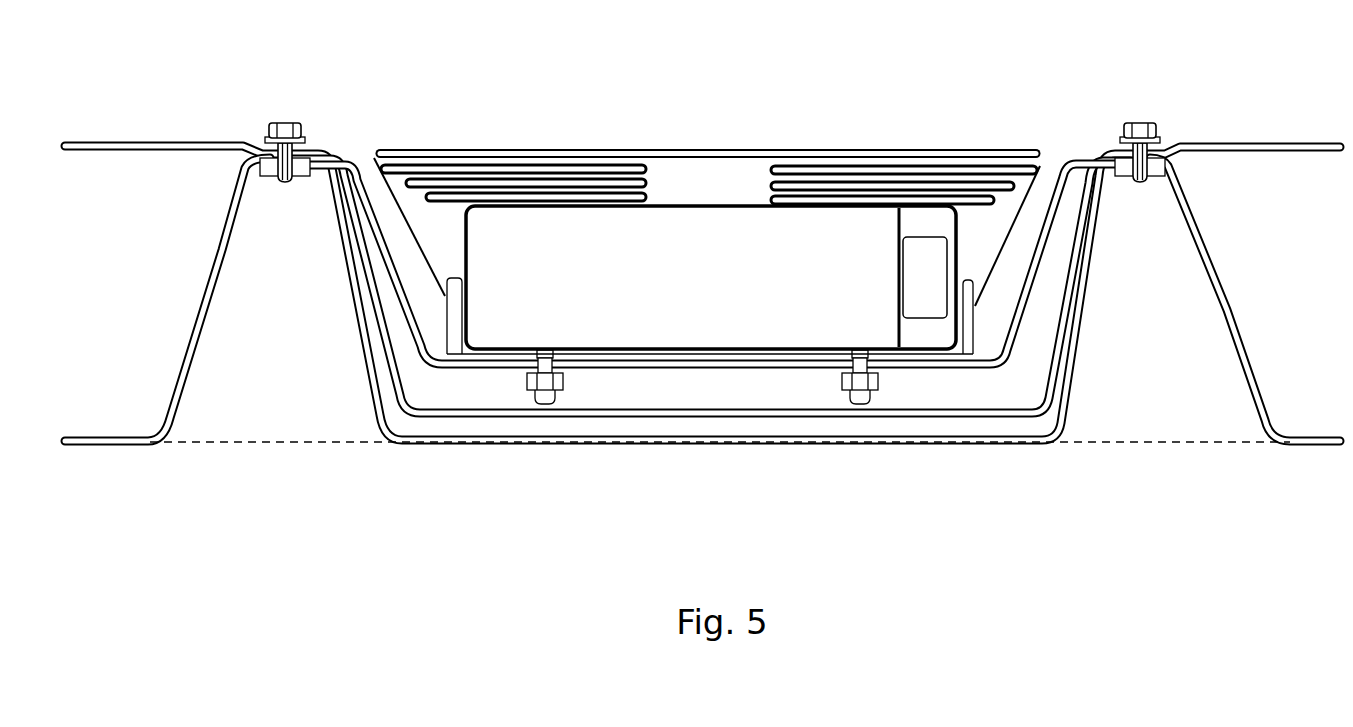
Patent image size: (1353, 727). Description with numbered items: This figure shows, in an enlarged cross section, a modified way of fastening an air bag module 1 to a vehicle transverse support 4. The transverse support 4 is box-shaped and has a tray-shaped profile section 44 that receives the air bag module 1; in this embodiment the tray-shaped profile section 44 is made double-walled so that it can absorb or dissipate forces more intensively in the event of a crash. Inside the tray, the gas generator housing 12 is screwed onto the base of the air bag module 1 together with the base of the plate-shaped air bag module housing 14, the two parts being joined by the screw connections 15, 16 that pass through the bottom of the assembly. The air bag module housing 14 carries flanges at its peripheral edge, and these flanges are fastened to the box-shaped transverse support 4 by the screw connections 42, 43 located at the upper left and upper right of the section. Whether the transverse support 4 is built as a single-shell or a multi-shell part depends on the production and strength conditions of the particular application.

The air bag module 1 is at (622, 145).
The transverse support 4 is at (133, 418).
The gas generator housing 12 is at (517, 328).
The air bag module housing 14 is at (1012, 343).
The screw connection 15 is at (545, 404).
The screw connection 16 is at (861, 404).
The screw connection 42 is at (1140, 122).
The screw connection 43 is at (290, 122).
The tray-shaped profile section 44 is at (394, 418).